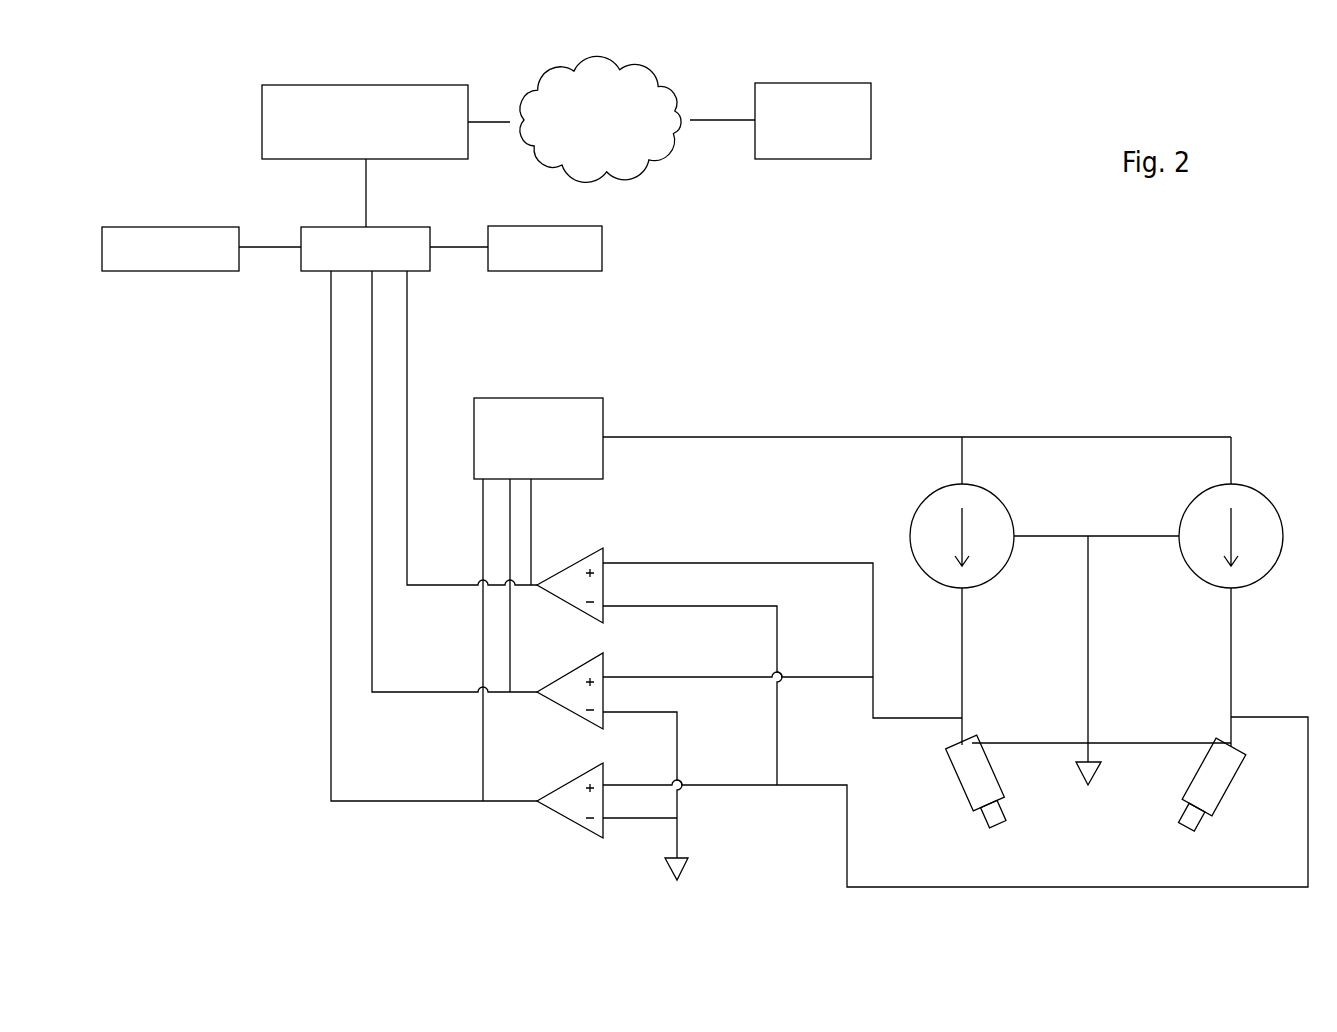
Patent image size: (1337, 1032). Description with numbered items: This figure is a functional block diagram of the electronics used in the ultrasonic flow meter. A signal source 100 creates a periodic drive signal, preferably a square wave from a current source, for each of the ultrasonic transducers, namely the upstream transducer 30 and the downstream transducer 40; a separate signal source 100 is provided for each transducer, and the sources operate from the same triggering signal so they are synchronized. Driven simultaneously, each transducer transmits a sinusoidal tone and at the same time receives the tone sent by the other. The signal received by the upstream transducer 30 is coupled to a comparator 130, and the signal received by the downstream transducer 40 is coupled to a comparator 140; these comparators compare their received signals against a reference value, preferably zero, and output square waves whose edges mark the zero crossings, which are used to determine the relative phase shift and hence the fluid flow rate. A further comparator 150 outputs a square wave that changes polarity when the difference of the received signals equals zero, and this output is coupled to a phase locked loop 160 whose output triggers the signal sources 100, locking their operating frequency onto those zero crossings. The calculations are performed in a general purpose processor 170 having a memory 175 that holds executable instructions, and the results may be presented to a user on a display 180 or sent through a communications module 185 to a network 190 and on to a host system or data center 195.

The communications module 185 is at (262, 122).
The network 190 is at (670, 147).
The data center 195 is at (871, 120).
The memory 175 is at (175, 273).
The processor 170 is at (301, 265).
The display 180 is at (583, 271).
The phase locked loop 160 is at (603, 418).
The comparator 150 is at (603, 558).
The comparator 140 is at (605, 665).
The comparator 130 is at (560, 788).
The signal source 100 is at (925, 498).
The upstream transducer 30 is at (955, 782).
The downstream transducer 40 is at (1233, 782).